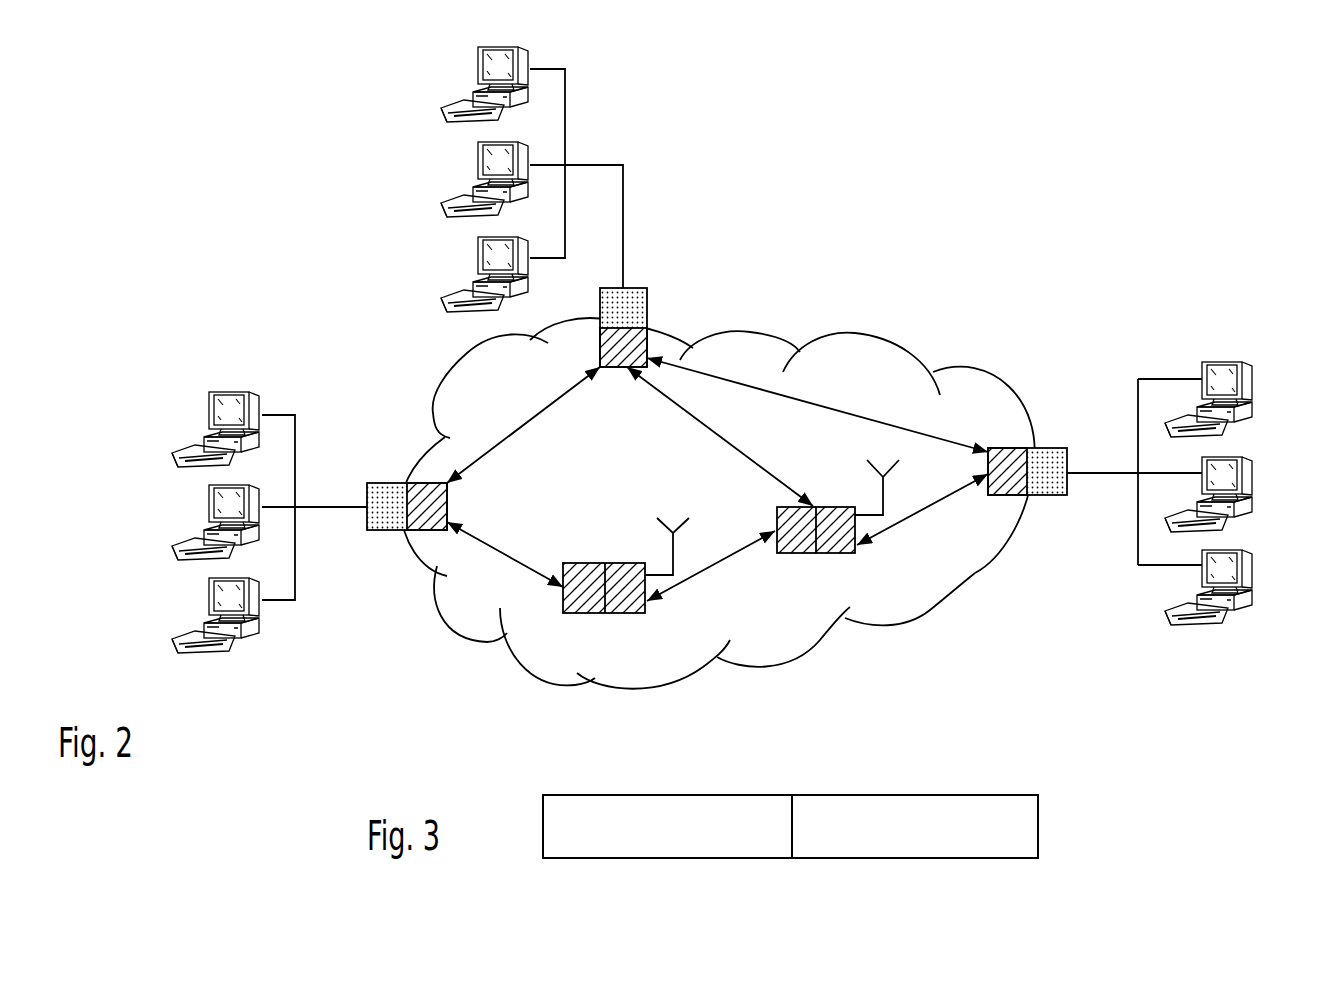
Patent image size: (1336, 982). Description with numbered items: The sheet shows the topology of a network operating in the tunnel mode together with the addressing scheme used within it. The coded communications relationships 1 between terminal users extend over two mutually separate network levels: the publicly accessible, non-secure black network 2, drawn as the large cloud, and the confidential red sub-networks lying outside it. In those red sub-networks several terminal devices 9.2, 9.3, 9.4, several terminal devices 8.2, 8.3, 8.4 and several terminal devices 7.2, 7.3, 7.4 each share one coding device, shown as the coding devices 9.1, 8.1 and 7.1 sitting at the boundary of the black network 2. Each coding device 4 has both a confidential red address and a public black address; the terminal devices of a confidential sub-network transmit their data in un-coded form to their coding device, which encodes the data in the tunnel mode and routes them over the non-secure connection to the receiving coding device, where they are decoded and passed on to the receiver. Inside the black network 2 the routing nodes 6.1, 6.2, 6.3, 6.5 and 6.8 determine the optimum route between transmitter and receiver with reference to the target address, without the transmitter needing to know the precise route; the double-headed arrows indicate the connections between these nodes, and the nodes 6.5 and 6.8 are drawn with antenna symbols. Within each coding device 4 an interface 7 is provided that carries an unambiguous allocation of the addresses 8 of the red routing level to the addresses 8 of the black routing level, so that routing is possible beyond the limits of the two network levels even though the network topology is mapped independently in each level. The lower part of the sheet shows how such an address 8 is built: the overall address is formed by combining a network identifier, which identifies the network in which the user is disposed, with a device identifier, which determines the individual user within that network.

In FIG. 2, the coded communications relationships 1 is at (857, 390).
In FIG. 2, the black public network 2 is at (980, 378).
In FIG. 2, the coding device 4 is at (598, 320).
In FIG. 2, the interface 7 is at (647, 332).
In FIG. 2, the network address 8 is at (390, 87).
In FIG. 3, the network address 8 is at (715, 772).
In FIG. 2, the network node 6.1 is at (1004, 454).
In FIG. 2, the network node 6.2 is at (605, 349).
In FIG. 2, the network node 6.3 is at (435, 526).
In FIG. 2, the network node with wireless antenna 6.5 is at (838, 528).
In FIG. 2, the network node with wireless antenna 6.8 is at (626, 587).
In FIG. 2, the gateway node 7.1 is at (1034, 492).
In FIG. 2, the terminal device 7.2 is at (1231, 399).
In FIG. 2, the terminal device 7.3 is at (1231, 494).
In FIG. 2, the terminal device 7.4 is at (1231, 587).
In FIG. 2, the gateway node 8.1 is at (400, 526).
In FIG. 2, the terminal device 8.2 is at (199, 429).
In FIG. 2, the terminal device 8.3 is at (199, 522).
In FIG. 2, the terminal device 8.4 is at (199, 615).
In FIG. 2, the gateway node 9.1 is at (632, 310).
In FIG. 2, the terminal device 9.2 is at (469, 84).
In FIG. 2, the terminal device 9.3 is at (469, 179).
In FIG. 2, the terminal device 9.4 is at (469, 274).